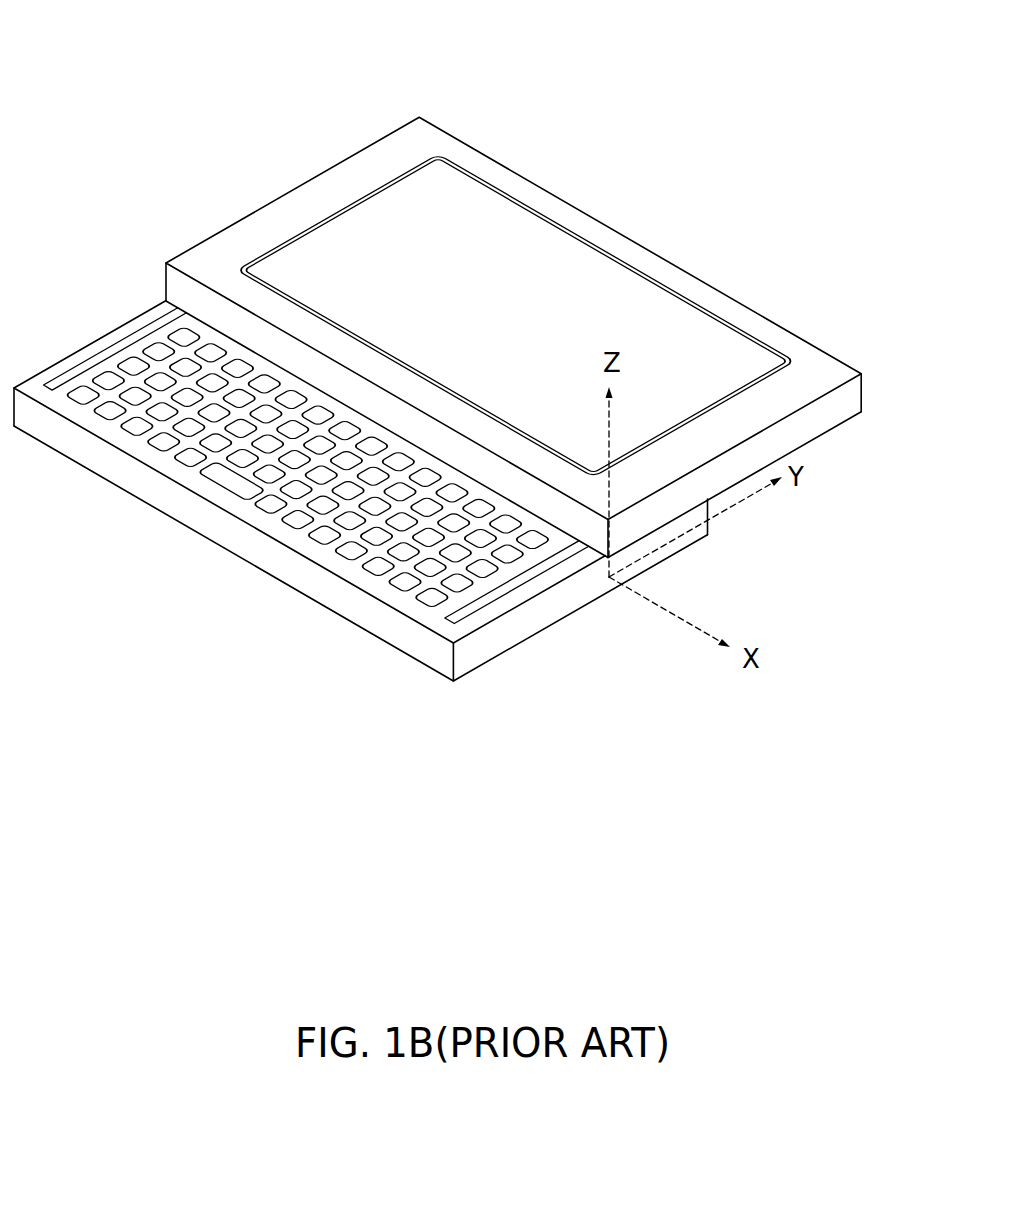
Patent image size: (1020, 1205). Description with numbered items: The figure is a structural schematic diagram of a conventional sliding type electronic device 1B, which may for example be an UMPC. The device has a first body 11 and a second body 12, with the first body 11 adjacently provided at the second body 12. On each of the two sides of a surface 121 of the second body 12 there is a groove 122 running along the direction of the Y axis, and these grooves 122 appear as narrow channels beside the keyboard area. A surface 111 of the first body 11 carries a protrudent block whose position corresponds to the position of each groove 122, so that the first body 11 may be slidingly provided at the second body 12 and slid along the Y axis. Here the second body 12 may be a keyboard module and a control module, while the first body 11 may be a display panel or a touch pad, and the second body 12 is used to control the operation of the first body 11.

The sliding type electronic device 1B is at (156, 143).
The first body 11 is at (832, 375).
The surface of the first body 111 is at (822, 436).
The second body 12 is at (474, 650).
The surface of the second body 121 is at (438, 625).
The groove 122 is at (527, 580).